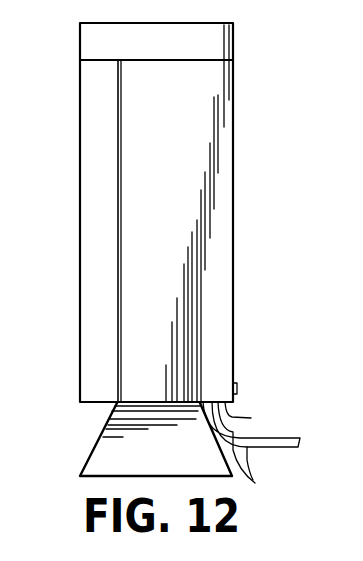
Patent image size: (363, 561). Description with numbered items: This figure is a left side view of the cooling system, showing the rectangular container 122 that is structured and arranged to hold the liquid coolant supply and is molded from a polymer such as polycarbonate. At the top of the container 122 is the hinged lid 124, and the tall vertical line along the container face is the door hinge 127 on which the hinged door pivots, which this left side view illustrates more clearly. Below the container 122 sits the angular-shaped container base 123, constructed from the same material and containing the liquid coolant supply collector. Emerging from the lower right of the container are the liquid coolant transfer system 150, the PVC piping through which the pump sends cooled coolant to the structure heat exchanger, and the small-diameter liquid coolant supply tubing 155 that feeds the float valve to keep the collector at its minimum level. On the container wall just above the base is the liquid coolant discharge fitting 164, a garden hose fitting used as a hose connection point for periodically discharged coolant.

The container 122 is at (150, 147).
The container base 123 is at (92, 452).
The hinged lid 124 is at (234, 44).
The hinge 127 is at (118, 172).
The liquid coolant transfer system 150 is at (255, 483).
The liquid coolant supply tubing 155 is at (251, 417).
The liquid coolant discharge fitting 164 is at (237, 386).